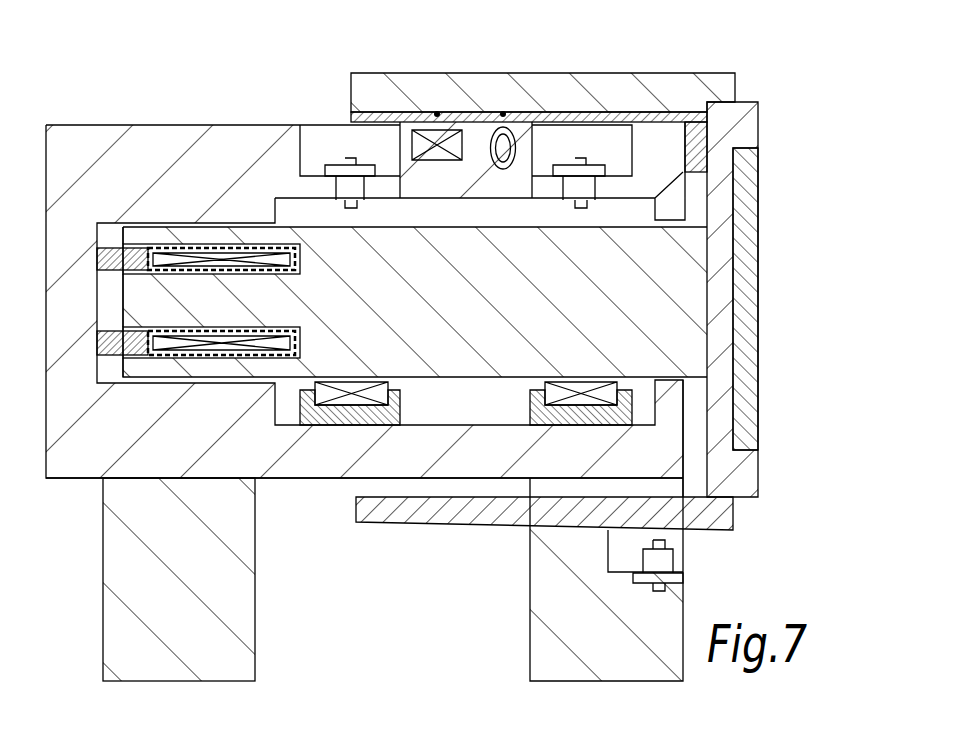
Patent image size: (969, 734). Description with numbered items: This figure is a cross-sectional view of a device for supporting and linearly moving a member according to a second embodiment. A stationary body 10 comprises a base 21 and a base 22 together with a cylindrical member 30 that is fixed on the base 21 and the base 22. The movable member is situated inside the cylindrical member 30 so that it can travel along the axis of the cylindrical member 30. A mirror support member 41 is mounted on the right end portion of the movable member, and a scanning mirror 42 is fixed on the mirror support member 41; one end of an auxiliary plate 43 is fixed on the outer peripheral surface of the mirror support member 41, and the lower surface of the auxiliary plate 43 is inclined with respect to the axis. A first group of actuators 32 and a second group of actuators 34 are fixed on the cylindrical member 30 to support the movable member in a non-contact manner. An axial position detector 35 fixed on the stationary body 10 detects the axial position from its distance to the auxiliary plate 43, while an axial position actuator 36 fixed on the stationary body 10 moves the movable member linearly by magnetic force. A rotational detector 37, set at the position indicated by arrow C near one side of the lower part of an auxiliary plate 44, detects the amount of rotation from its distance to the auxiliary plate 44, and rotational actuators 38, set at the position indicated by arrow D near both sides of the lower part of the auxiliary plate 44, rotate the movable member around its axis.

The stationary body 10 is at (78, 479).
The base 21 is at (547, 655).
The base 22 is at (237, 655).
The cylindrical member 30 is at (85, 151).
The first group of actuators 32 is at (541, 402).
The second group of actuators 34 is at (377, 395).
The axial position detector 35 is at (667, 562).
The axial position actuator 36 is at (108, 262).
The rotational detector 37 is at (505, 146).
The rotational actuator 38 is at (430, 128).
The mirror support member 41 is at (747, 108).
The scanning mirror 42 is at (752, 185).
The auxiliary plate 43 is at (722, 520).
The auxiliary plate 44 is at (688, 88).
The position indicated by arrow C is at (503, 112).
The position indicated by arrow D is at (437, 112).